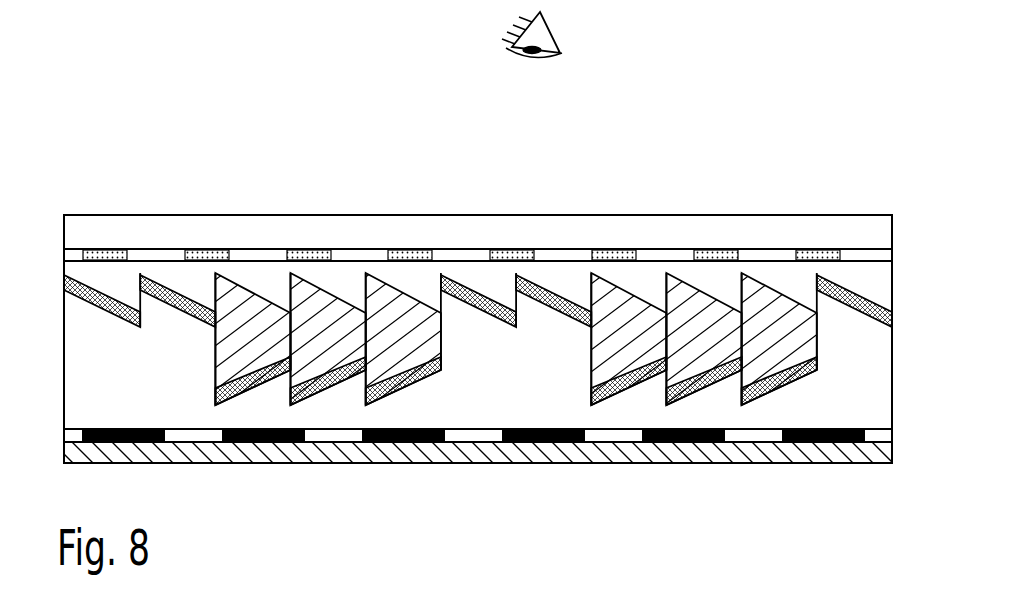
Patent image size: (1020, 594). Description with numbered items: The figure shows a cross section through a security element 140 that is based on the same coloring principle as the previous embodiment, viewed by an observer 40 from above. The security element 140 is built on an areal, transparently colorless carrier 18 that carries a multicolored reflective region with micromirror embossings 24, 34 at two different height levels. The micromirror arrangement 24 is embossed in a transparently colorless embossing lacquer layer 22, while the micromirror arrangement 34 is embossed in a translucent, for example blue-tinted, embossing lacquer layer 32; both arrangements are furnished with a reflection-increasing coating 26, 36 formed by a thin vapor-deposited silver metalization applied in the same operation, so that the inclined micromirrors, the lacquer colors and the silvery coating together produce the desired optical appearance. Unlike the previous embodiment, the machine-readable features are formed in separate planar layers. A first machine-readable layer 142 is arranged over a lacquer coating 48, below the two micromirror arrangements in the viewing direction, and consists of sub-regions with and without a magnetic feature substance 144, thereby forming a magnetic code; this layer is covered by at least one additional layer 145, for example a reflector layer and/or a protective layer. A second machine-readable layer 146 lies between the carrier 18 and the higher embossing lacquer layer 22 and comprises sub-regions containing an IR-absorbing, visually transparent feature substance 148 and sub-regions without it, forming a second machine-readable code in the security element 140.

The viewer eye 40 is at (547, 26).
The security element 140 is at (127, 158).
The carrier 18 is at (297, 226).
The second machine-readable layer 146 is at (880, 256).
The IR-absorbing, visually transparent feature substance 148 is at (815, 250).
The embossing lacquer layer 22 is at (880, 288).
The micromirror embossing 24 is at (625, 291).
The micromirror embossing 34 is at (709, 373).
The embossing lacquer layer 32 is at (230, 349).
The reflection-increasing coating 36 is at (405, 384).
The reflection-increasing coating 26 is at (552, 306).
The lacquer coating 48 is at (880, 364).
The magnetic feature substance 144 is at (853, 428).
The first machine-readable layer 142 is at (880, 437).
The additional layer 145 is at (817, 454).